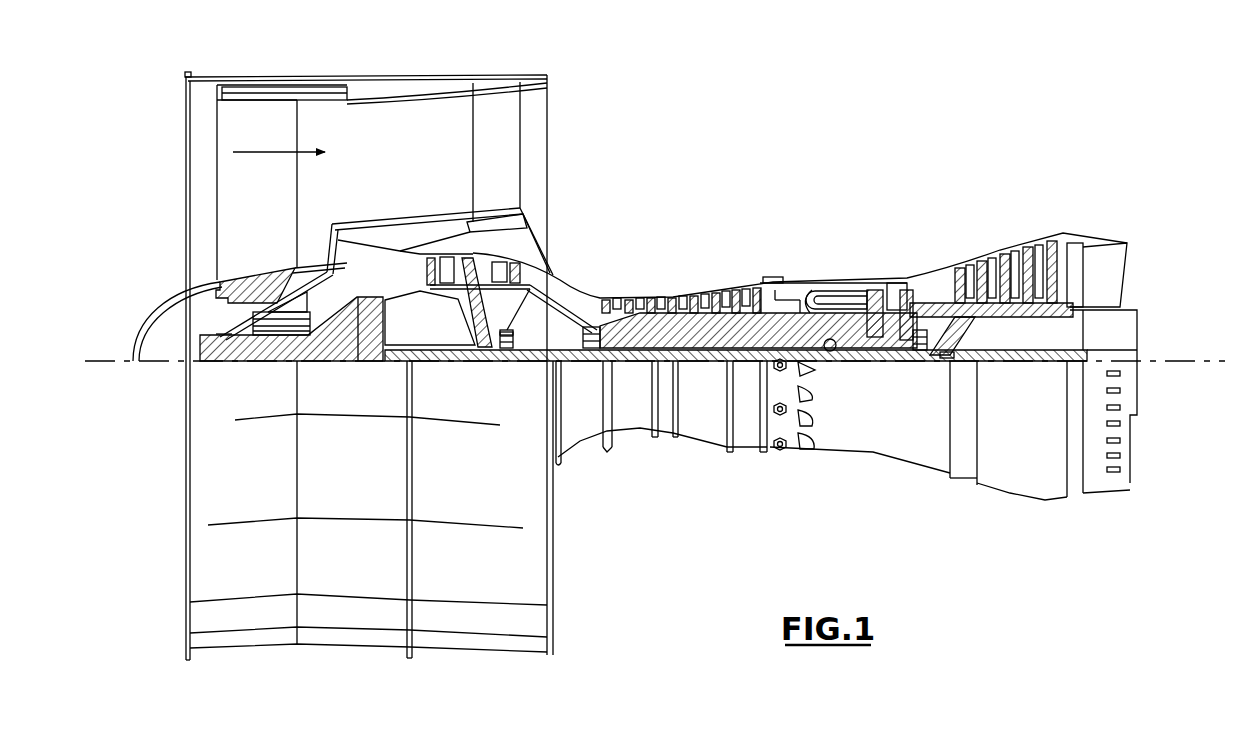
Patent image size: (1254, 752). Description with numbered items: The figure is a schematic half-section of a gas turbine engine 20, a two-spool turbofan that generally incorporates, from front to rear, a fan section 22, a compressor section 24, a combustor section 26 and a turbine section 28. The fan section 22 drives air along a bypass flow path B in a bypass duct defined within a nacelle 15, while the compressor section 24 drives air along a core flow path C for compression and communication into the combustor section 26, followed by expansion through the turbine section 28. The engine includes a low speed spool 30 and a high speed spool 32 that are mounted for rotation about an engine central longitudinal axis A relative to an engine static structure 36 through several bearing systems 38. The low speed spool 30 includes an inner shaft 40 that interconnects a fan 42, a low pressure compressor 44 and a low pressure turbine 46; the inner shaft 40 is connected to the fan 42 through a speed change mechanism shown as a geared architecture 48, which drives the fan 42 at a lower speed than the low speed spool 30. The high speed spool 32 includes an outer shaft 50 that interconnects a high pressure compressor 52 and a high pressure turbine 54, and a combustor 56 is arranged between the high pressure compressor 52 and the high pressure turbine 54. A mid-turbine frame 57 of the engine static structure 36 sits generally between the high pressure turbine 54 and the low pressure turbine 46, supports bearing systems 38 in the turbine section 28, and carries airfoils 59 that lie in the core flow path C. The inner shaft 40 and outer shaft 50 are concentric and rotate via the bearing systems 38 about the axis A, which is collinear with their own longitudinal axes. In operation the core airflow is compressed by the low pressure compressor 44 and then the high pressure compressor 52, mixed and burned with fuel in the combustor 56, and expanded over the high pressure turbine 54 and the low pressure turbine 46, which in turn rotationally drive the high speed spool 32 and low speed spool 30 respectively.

The nacelle 15 is at (367, 78).
The gas turbine engine 20 is at (876, 90).
The fan section 22 is at (293, 66).
The compressor section 24 is at (600, 268).
The combustor section 26 is at (818, 255).
The turbine section 28 is at (970, 216).
The low speed spool 30 is at (705, 373).
The high speed spool 32 is at (748, 320).
The engine static structure 36 is at (747, 455).
The bearing systems 38 is at (507, 333).
The inner shaft 40 is at (566, 360).
The fan 42 is at (267, 205).
The low pressure compressor 44 is at (538, 212).
The low pressure turbine 46 is at (1017, 250).
The geared architecture 48 is at (373, 343).
The outer shaft 50 is at (828, 352).
The high pressure compressor 52 is at (660, 340).
The high pressure turbine 54 is at (887, 280).
The combustor 56 is at (822, 297).
The mid-turbine frame 57 is at (931, 270).
The airfoils 59 is at (966, 325).
The engine central longitudinal axis A is at (1222, 361).
The bypass flow path B is at (273, 152).
The core flow path C is at (368, 258).